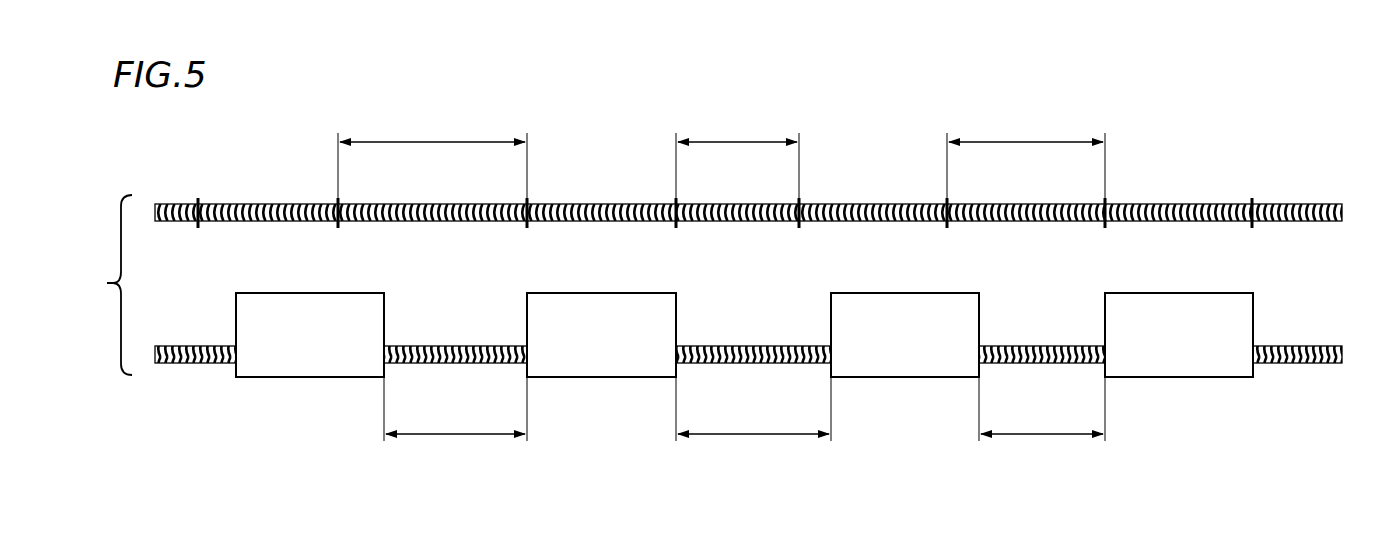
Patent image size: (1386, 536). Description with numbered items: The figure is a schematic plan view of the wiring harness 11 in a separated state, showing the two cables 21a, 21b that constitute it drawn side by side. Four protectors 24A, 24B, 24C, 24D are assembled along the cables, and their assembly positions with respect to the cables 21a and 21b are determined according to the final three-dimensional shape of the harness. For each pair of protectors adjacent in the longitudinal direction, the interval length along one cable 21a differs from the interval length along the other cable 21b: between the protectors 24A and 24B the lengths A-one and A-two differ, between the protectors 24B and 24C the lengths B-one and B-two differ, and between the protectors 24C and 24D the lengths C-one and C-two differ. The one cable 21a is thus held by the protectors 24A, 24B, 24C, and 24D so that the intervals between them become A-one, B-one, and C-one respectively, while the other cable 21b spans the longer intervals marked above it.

The wiring harness 11 is at (1240, 127).
The cable 21a is at (1303, 363).
The cable 21b is at (1312, 204).
The protector 24A is at (299, 377).
The protector 24B is at (603, 377).
The protector 24C is at (911, 377).
The protector 24D is at (1180, 377).